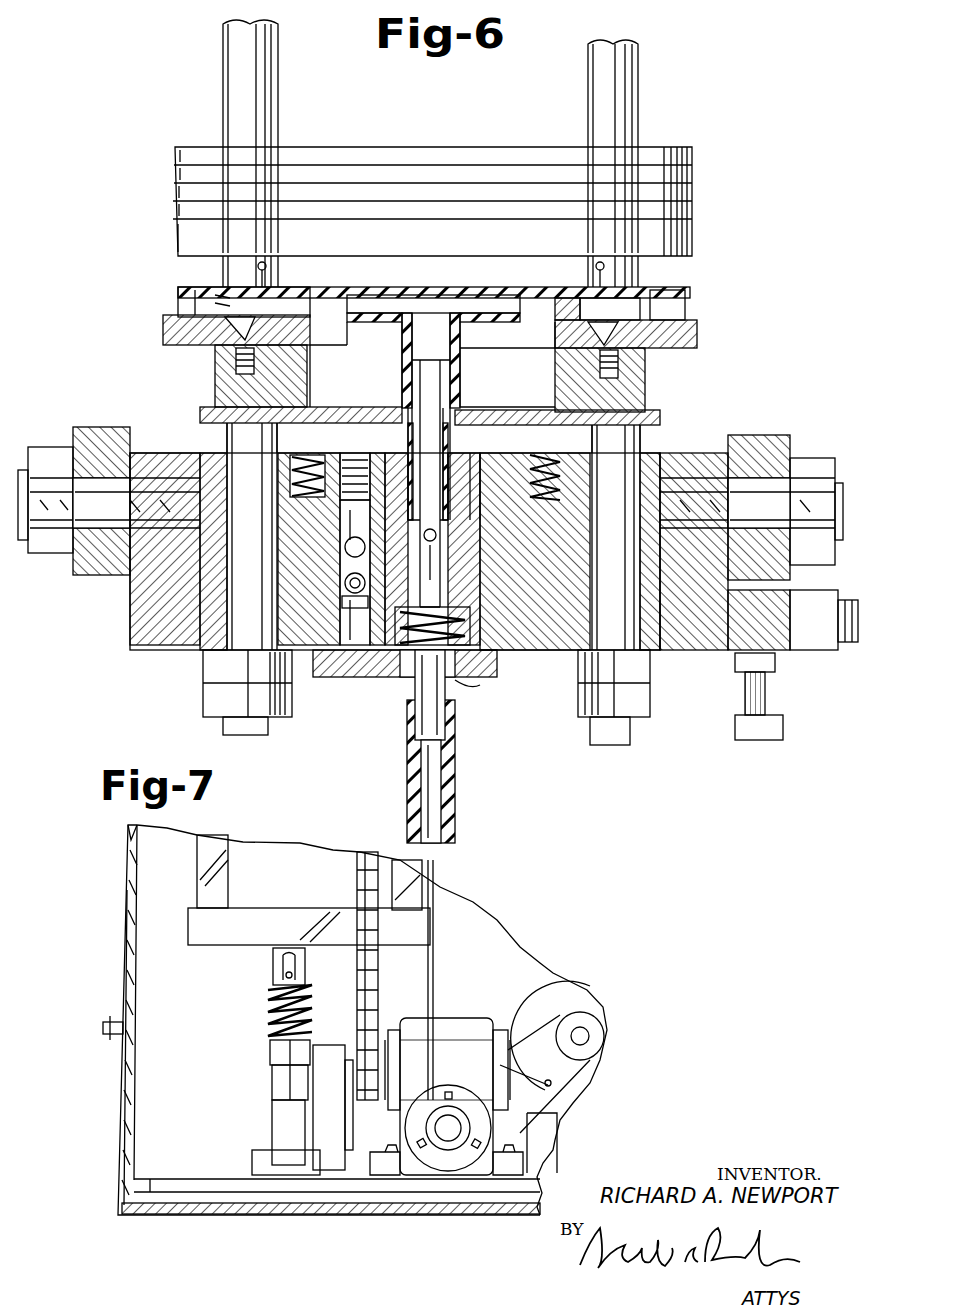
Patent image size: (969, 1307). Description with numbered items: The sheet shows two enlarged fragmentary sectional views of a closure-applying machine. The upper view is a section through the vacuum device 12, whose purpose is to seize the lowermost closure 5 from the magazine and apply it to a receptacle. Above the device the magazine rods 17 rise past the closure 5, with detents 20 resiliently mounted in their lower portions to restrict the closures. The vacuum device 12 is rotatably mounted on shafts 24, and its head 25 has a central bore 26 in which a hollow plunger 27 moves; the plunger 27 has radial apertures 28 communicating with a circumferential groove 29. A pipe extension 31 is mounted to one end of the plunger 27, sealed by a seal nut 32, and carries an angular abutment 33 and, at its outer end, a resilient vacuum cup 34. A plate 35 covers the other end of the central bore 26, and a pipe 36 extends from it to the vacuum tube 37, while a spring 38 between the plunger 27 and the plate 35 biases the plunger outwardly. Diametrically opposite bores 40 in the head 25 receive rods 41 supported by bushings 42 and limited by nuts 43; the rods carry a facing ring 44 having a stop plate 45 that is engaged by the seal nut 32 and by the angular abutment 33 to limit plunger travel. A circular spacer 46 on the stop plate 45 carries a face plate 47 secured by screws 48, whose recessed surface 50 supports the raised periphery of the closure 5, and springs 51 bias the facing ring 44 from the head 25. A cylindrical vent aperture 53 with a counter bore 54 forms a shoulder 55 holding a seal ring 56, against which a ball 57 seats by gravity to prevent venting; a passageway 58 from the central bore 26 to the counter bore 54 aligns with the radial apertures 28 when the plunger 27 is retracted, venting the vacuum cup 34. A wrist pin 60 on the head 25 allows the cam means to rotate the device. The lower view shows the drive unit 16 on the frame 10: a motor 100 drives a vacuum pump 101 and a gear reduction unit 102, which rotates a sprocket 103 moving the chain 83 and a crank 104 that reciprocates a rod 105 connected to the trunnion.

In FIG. 6, the circular closure 5 is at (432, 152).
In FIG. 7, the frame 10 is at (545, 1138).
In FIG. 6, the vacuum device 12 is at (689, 452).
In FIG. 7, the drive unit 16 is at (445, 1021).
In FIG. 6, the rods 17 is at (262, 118).
In FIG. 6, the detents 20 is at (268, 268).
In FIG. 6, the shafts 24 is at (75, 533).
In FIG. 6, the head 25 is at (522, 652).
In FIG. 6, the central bore 26 is at (470, 680).
In FIG. 6, the hollow plunger 27 is at (472, 500).
In FIG. 6, the radial apertures 28 is at (440, 470).
In FIG. 6, the circumferential groove 29 is at (530, 460).
In FIG. 6, the pipe extension 31 is at (456, 416).
In FIG. 6, the seal nut 32 is at (360, 470).
In FIG. 6, the angular abutment 33 is at (452, 400).
In FIG. 6, the resilient vacuum cup 34 is at (403, 364).
In FIG. 6, the plate 35 is at (375, 677).
In FIG. 6, the pipe 36 is at (406, 690).
In FIG. 6, the vacuum tube 37 is at (455, 778).
In FIG. 6, the spring 38 is at (455, 686).
In FIG. 6, the bores 40 is at (196, 650).
In FIG. 6, the rods 41 is at (227, 438).
In FIG. 6, the bushings 42 is at (224, 453).
In FIG. 6, the nuts 43 is at (210, 690).
In FIG. 6, the facing ring 44 is at (702, 328).
In FIG. 6, the stop plate 45 is at (200, 416).
In FIG. 6, the circular spacer 46 is at (217, 386).
In FIG. 6, the face plate 47 is at (163, 333).
In FIG. 6, the screws 48 is at (556, 344).
In FIG. 6, the recessed surface 50 is at (180, 306).
In FIG. 6, the springs 51 is at (310, 455).
In FIG. 6, the cylindrical vent aperture 53 is at (345, 622).
In FIG. 6, the counter bore 54 is at (340, 516).
In FIG. 6, the shoulder 55 is at (340, 600).
In FIG. 6, the seal ring 56 is at (345, 583).
In FIG. 6, the ball 57 is at (345, 548).
In FIG. 6, the passageway 58 is at (342, 540).
In FIG. 6, the wrist pin 60 is at (822, 652).
In FIG. 7, the chain 83 is at (372, 985).
In FIG. 7, the motor 100 is at (535, 1000).
In FIG. 7, the vacuum pump 101 is at (452, 1130).
In FIG. 7, the gear reduction unit 102 is at (468, 1068).
In FIG. 7, the sprocket 103 is at (348, 1105).
In FIG. 7, the crank 104 is at (322, 1060).
In FIG. 7, the rod 105 is at (270, 1040).